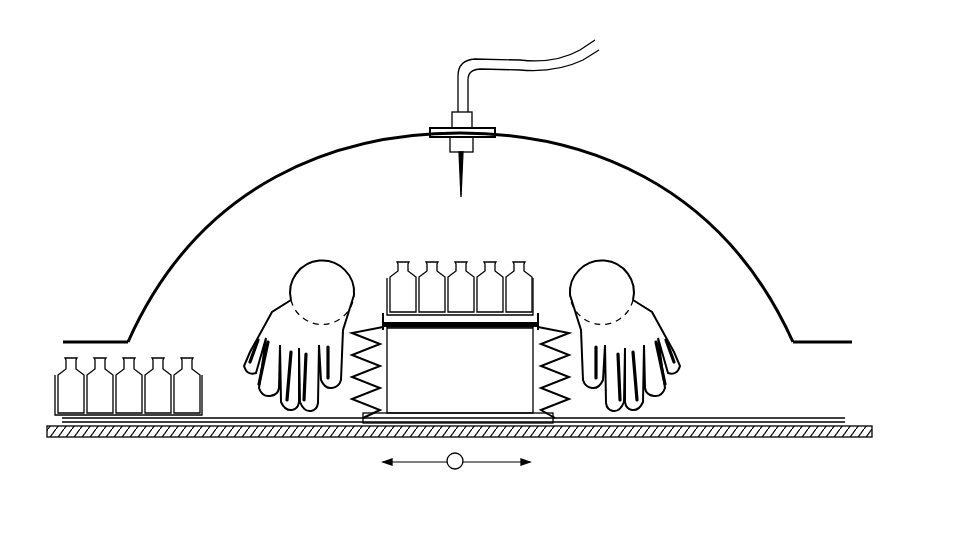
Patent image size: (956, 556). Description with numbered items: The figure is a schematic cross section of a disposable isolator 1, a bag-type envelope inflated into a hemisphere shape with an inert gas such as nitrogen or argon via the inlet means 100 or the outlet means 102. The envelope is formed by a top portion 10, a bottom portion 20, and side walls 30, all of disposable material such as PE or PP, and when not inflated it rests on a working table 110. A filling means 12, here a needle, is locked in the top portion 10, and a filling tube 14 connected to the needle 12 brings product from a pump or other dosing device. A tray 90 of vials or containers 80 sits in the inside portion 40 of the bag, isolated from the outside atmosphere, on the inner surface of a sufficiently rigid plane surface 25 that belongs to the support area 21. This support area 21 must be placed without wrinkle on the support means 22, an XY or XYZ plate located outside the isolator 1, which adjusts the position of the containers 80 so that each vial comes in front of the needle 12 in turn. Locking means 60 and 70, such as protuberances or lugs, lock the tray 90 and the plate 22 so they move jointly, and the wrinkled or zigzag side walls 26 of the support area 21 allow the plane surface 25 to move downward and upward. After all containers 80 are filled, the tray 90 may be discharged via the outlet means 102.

The disposable isolator 1 is at (255, 122).
The top portion 10 is at (362, 137).
The filling means 12 is at (440, 120).
The filling tube 14 is at (509, 64).
The bottom portion 20 is at (152, 325).
The support area 21 is at (362, 421).
The support means 22 is at (474, 390).
The plane surface 25 is at (425, 329).
The wrinkled or zigzag side walls 26 is at (563, 395).
The side walls 30 is at (210, 212).
The inside portion 40 is at (548, 250).
The locking means 60 is at (530, 330).
The locking means 70 is at (538, 318).
The containers 80 is at (512, 266).
The tray 90 is at (387, 290).
The inlet means 100 is at (80, 341).
The outlet means 102 is at (829, 341).
The working table 110 is at (274, 308).